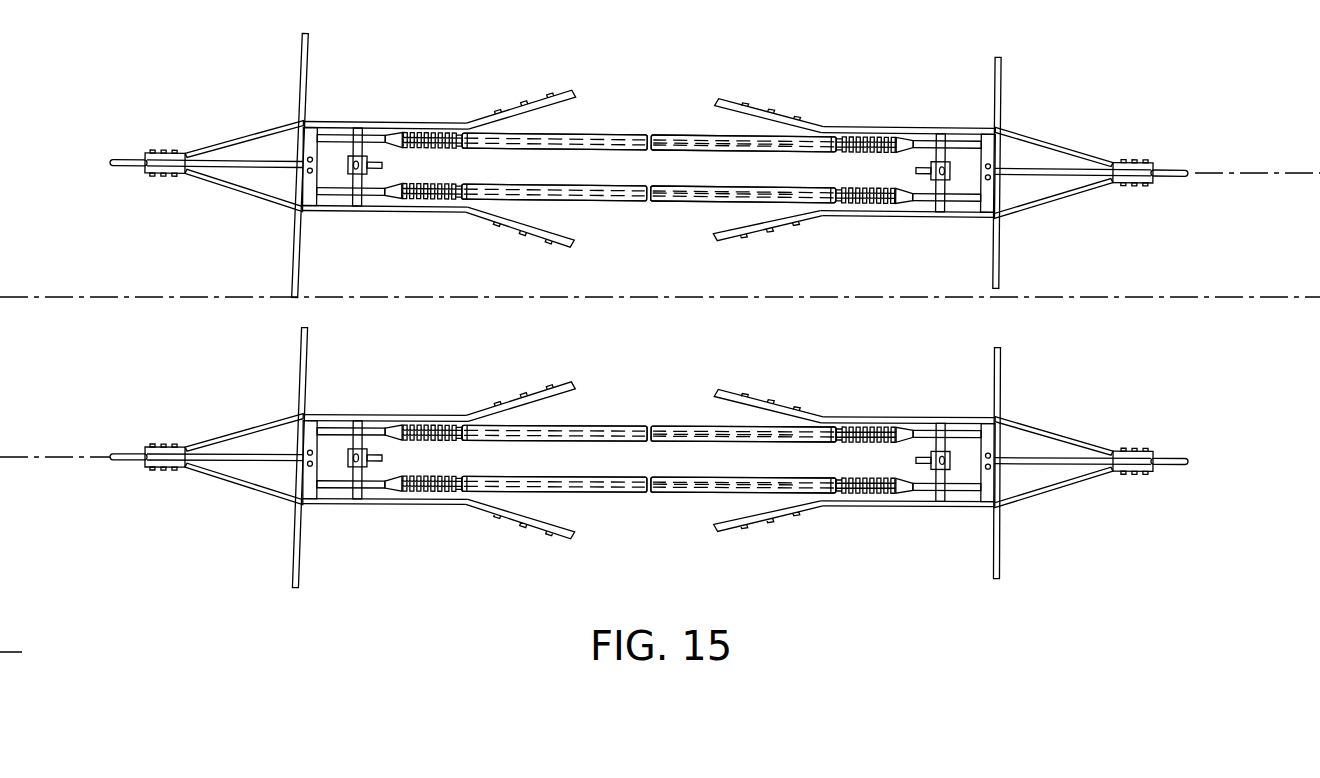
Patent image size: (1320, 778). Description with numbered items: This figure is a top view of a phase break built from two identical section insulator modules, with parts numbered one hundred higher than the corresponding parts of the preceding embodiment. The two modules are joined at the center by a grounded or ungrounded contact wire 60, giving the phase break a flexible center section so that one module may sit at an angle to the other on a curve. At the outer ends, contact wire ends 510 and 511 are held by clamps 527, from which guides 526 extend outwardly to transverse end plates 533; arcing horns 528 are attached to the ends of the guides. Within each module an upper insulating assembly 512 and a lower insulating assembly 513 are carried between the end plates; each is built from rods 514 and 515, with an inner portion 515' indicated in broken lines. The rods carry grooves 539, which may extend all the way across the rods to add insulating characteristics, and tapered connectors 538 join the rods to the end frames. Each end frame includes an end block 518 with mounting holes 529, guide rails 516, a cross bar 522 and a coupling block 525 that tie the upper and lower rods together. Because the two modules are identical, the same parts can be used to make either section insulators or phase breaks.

The contact wire 60 is at (1170, 168).
The contact wire end 510 is at (122, 158).
The contact wire end 511 is at (1170, 460).
The insulating assembly 512 is at (610, 120).
The insulating assembly 513 is at (628, 215).
The rods 514 is at (600, 186).
The rods 515 is at (744, 317).
The rod inner portion 515' is at (726, 314).
The guide rails 516 is at (338, 134).
The end block 518 is at (308, 128).
The cross bar 522 is at (362, 200).
The coupling block 525 is at (353, 158).
The guides 526 is at (246, 119).
The clamp 527 is at (166, 173).
The arcing horns 528 is at (576, 92).
The mounting holes 529 is at (307, 160).
The end plate 533 is at (303, 48).
The tapered connector 538 is at (390, 138).
The grooves 539 is at (448, 130).